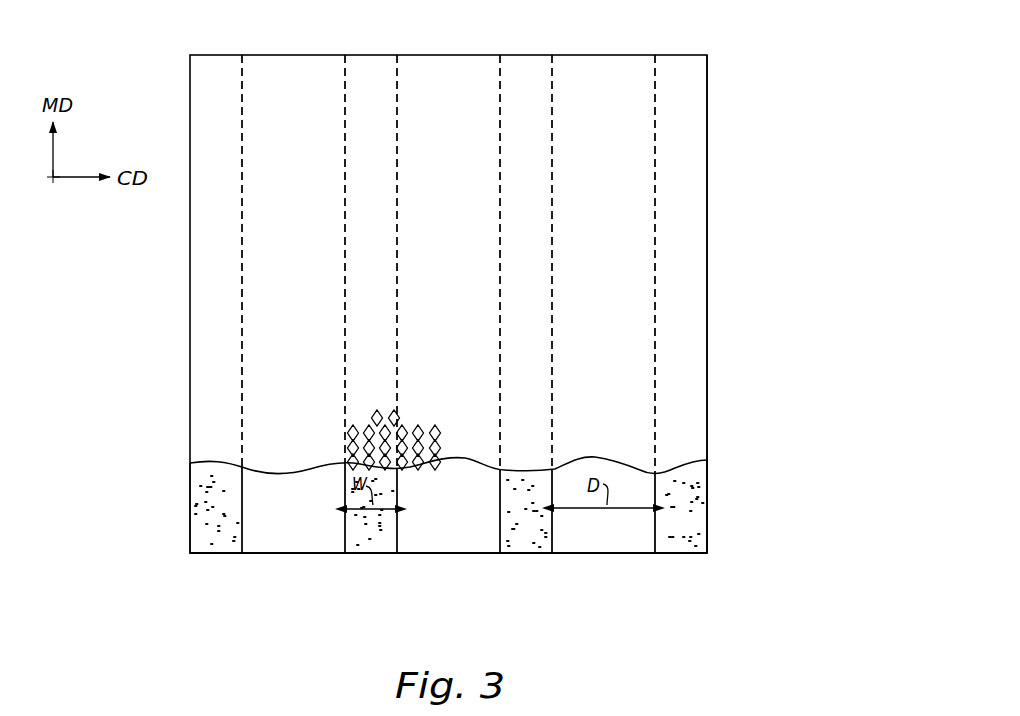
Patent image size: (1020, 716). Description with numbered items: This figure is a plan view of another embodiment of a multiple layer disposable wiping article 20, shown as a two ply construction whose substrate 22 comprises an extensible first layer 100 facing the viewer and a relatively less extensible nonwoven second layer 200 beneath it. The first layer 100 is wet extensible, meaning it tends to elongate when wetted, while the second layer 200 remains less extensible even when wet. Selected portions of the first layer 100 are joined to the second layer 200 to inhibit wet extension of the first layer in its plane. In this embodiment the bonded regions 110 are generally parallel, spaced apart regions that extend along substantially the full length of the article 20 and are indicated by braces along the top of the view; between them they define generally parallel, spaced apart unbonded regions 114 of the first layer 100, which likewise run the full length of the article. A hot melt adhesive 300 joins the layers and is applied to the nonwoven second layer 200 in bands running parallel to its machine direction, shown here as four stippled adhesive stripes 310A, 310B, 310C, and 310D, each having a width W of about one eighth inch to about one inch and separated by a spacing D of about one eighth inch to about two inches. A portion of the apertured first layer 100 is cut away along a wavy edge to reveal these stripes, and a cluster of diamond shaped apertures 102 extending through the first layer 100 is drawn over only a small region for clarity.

The disposable wiping article 20 is at (727, 113).
The substrate 22 is at (709, 206).
The first layer 100 is at (693, 437).
The apertures 102 is at (380, 416).
The bonded regions 110 is at (242, 48).
The unbonded regions 114 is at (345, 48).
The second layer 200 is at (697, 509).
The adhesive 300 is at (533, 548).
The adhesive stripe 310A is at (203, 548).
The adhesive stripe 310B is at (358, 548).
The adhesive stripe 310C is at (512, 548).
The adhesive stripe 310D is at (667, 548).